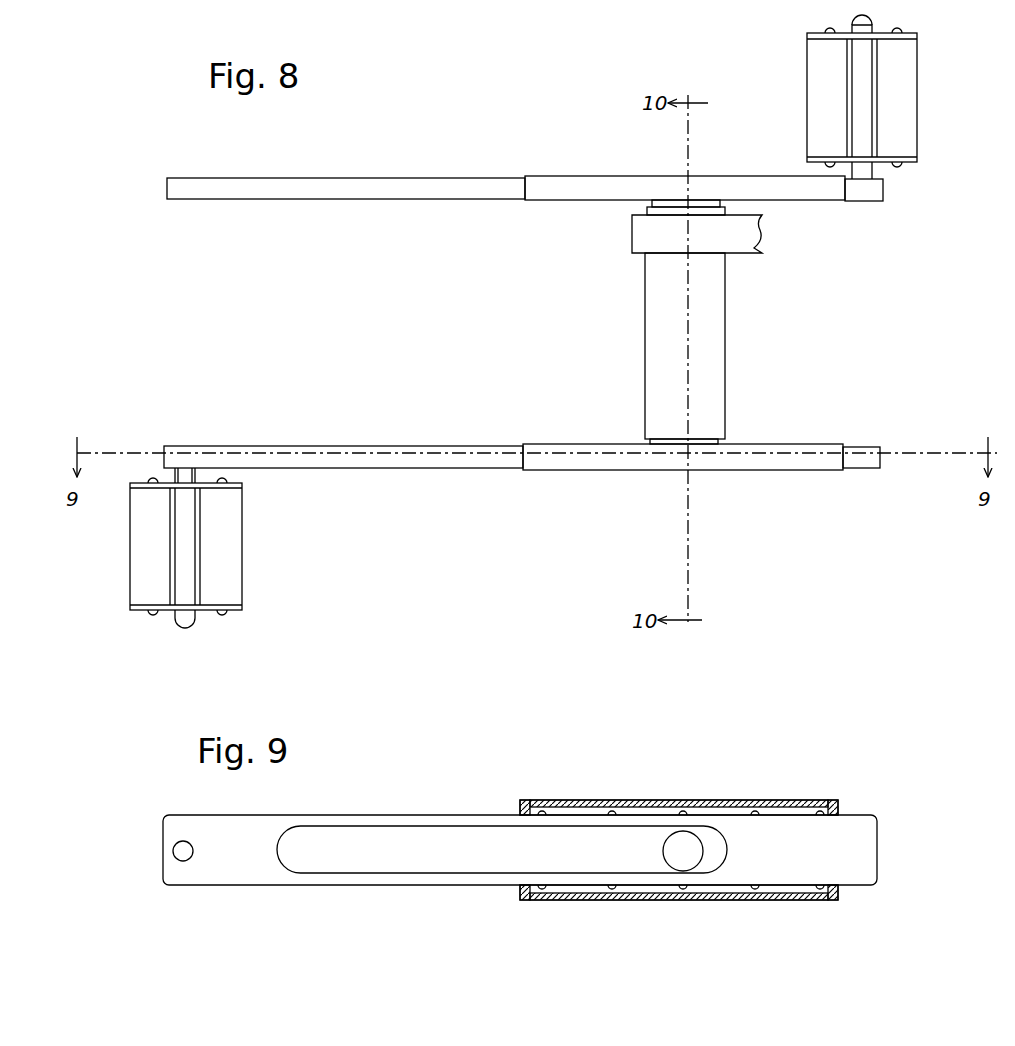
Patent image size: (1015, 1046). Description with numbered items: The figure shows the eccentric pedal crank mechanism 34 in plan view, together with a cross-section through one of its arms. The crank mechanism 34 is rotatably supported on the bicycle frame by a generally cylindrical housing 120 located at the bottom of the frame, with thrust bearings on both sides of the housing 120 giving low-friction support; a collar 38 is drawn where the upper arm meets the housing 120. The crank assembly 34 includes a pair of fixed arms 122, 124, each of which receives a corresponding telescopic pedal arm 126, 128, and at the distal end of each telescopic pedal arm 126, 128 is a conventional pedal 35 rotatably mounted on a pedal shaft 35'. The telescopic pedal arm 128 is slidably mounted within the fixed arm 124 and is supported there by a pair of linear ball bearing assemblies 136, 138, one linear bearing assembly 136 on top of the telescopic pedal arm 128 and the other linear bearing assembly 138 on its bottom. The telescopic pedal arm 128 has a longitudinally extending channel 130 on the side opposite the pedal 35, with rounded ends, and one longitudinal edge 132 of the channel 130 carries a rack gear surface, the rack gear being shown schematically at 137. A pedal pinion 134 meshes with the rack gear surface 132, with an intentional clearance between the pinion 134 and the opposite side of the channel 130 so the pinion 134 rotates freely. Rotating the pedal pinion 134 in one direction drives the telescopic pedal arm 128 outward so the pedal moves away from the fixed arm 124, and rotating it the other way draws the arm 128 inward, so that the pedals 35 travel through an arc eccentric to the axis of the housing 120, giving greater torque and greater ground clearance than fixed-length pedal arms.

In FIG. 8, the eccentric pedal crank mechanism 34 is at (363, 180).
In FIG. 8, the pedal 35 is at (550, 321).
In FIG. 8, the pedal shaft 35' is at (218, 437).
In FIG. 9, the pedal shaft 35' is at (138, 849).
In FIG. 8, the hub 38 is at (747, 248).
In FIG. 8, the cylindrical housing 120 is at (712, 318).
In FIG. 8, the fixed arm 122 is at (543, 186).
In FIG. 8, the fixed arm 124 is at (582, 472).
In FIG. 9, the fixed arm 124 is at (568, 802).
In FIG. 8, the telescopic pedal arm 126 is at (227, 190).
In FIG. 8, the telescopic pedal arm 128 is at (386, 470).
In FIG. 9, the telescopic pedal arm 128 is at (247, 837).
In FIG. 9, the longitudinally extending channel 130 is at (345, 828).
In FIG. 9, the rack gear surface 132 is at (447, 873).
In FIG. 9, the pedal pinion 134 is at (685, 848).
In FIG. 9, the linear ball bearing assembly 136 is at (820, 802).
In FIG. 9, the rack gear 137 is at (372, 873).
In FIG. 9, the linear ball bearing assembly 138 is at (820, 882).